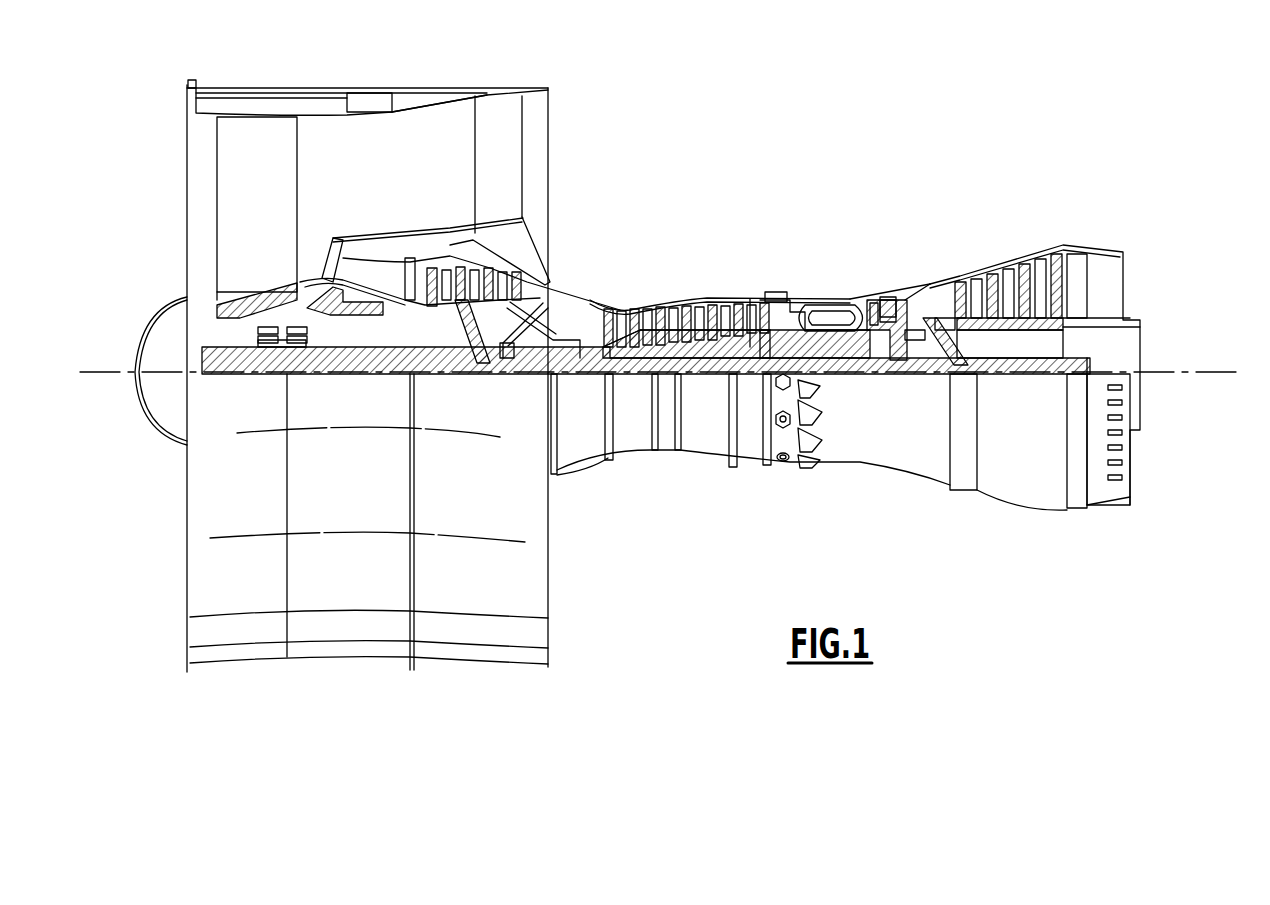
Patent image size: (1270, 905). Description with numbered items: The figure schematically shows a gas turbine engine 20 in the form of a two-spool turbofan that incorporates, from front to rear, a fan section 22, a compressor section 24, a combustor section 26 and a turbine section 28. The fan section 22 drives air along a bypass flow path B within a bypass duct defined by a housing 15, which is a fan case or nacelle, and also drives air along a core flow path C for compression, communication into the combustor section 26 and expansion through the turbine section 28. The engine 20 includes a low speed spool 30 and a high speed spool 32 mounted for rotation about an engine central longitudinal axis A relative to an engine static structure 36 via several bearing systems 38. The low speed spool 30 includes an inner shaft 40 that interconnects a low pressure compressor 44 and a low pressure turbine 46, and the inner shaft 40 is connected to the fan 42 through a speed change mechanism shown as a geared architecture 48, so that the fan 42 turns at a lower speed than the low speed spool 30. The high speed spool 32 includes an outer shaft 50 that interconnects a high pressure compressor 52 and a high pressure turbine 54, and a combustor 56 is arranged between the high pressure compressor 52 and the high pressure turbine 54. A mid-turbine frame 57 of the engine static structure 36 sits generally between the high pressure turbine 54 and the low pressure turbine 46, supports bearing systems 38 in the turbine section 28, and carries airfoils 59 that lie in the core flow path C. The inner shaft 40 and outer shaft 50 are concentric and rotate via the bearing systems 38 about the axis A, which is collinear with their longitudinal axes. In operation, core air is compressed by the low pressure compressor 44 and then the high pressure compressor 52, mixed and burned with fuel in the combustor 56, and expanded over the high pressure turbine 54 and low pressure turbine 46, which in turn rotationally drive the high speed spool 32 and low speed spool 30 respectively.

The gas turbine engine 20 is at (836, 138).
The housing 15 is at (368, 96).
The fan section 22 is at (298, 80).
The fan 42 is at (270, 220).
The compressor section 24 is at (602, 282).
The combustor section 26 is at (824, 268).
The turbine section 28 is at (970, 232).
The low speed spool 30 is at (708, 380).
The high speed spool 32 is at (750, 332).
The engine static structure 36 is at (748, 462).
The bearing systems 38 is at (505, 376).
The inner shaft 40 is at (572, 380).
The low pressure compressor 44 is at (455, 287).
The low pressure turbine 46 is at (1010, 256).
The geared architecture 48 is at (372, 376).
The outer shaft 50 is at (832, 380).
The high pressure compressor 52 is at (667, 318).
The high pressure turbine 54 is at (890, 298).
The combustor 56 is at (828, 314).
The mid-turbine frame 57 is at (932, 285).
The airfoils 59 is at (932, 308).
The engine central longitudinal axis A is at (1220, 372).
The bypass flow path B is at (335, 165).
The core flow path C is at (366, 268).